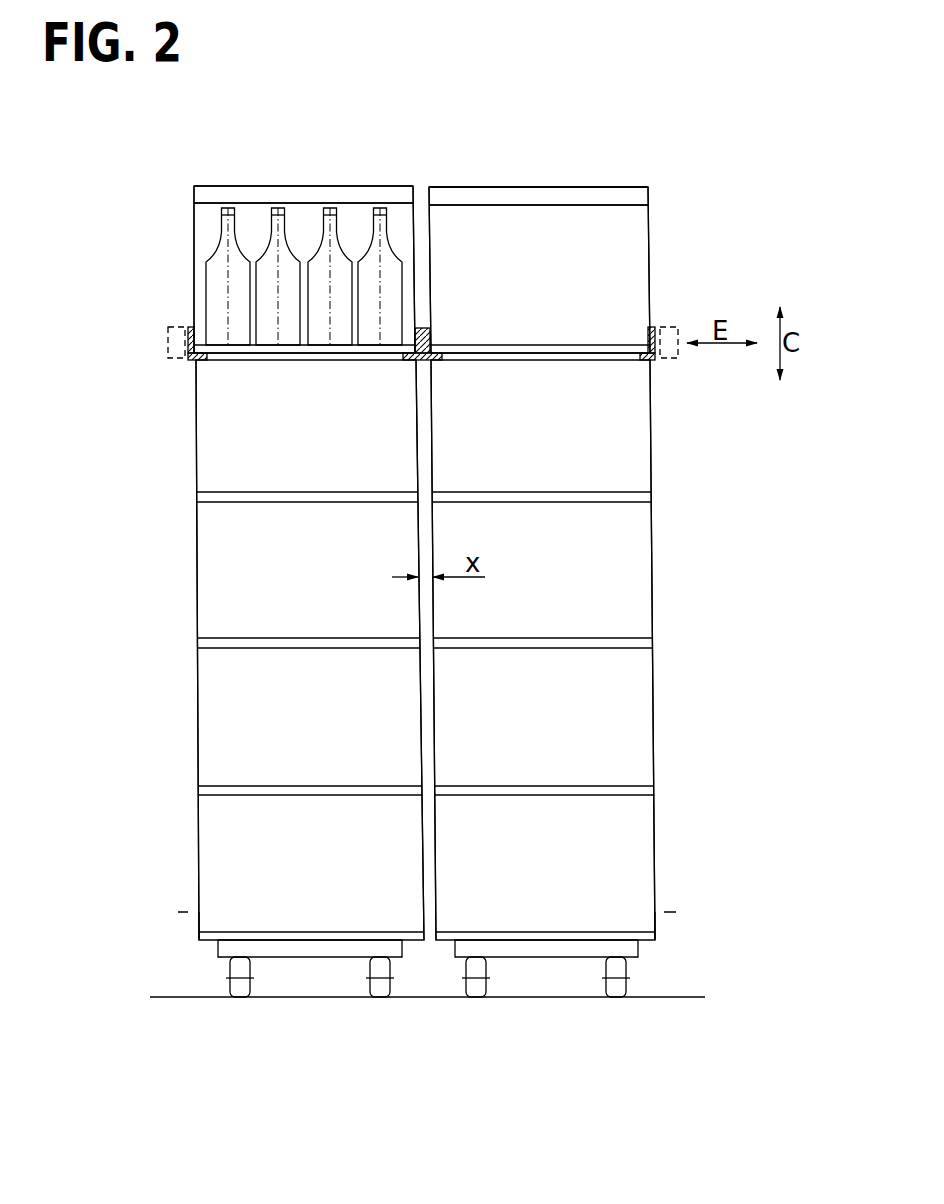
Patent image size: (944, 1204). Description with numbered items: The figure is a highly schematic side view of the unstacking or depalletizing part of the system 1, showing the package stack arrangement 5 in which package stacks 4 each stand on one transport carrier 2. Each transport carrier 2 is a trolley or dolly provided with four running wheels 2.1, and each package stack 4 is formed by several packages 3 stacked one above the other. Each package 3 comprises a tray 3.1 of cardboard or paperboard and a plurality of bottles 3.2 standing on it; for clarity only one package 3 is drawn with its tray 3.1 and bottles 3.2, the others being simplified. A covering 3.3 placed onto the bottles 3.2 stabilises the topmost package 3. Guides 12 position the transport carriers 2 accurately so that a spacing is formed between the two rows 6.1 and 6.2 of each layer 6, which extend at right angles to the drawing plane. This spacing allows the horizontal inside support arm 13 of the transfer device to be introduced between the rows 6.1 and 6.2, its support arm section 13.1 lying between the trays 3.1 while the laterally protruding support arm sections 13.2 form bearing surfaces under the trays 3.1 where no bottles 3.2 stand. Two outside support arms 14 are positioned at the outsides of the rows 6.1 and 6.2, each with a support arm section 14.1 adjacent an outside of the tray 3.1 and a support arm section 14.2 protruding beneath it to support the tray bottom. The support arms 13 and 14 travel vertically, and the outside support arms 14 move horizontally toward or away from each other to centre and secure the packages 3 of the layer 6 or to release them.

The system 1 is at (712, 255).
The transport carrier 2 is at (310, 950).
The running wheels 2.1 is at (238, 988).
The package 3 is at (194, 216).
The tray 3.1 is at (303, 353).
The bottles 3.2 is at (225, 232).
The covering 3.3 is at (333, 196).
The package stack 4 is at (667, 426).
The package stack arrangement 5 is at (502, 185).
The layer 6 is at (405, 251).
The first row 6.1 is at (654, 220).
The second row 6.2 is at (190, 263).
The guides 12 is at (196, 914).
The support arm 13 is at (442, 343).
The support arm section 13.1 is at (425, 330).
The support arm section 13.2 is at (406, 360).
The outside support arms 14 is at (188, 366).
The support arm section 14.1 is at (188, 335).
The support arm section 14.2 is at (205, 360).